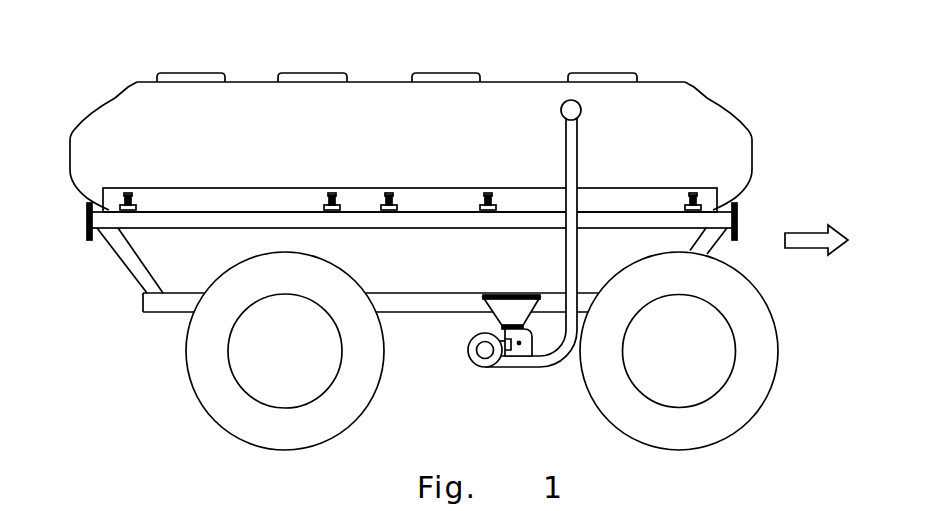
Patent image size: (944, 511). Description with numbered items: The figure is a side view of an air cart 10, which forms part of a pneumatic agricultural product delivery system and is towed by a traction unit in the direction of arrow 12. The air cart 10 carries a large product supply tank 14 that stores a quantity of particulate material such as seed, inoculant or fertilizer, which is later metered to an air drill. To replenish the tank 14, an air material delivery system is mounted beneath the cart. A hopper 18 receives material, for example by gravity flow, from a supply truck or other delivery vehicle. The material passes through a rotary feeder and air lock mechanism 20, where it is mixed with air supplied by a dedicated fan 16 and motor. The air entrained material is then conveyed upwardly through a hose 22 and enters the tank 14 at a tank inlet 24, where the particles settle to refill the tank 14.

The air cart 10 is at (138, 324).
The arrow 12 is at (813, 233).
The product supply tank 14 is at (460, 132).
The fan 16 is at (480, 357).
The hopper 18 is at (508, 294).
The rotary feeder and air lock mechanism 20 is at (522, 348).
The hose 22 is at (569, 345).
The tank inlet 24 is at (582, 107).